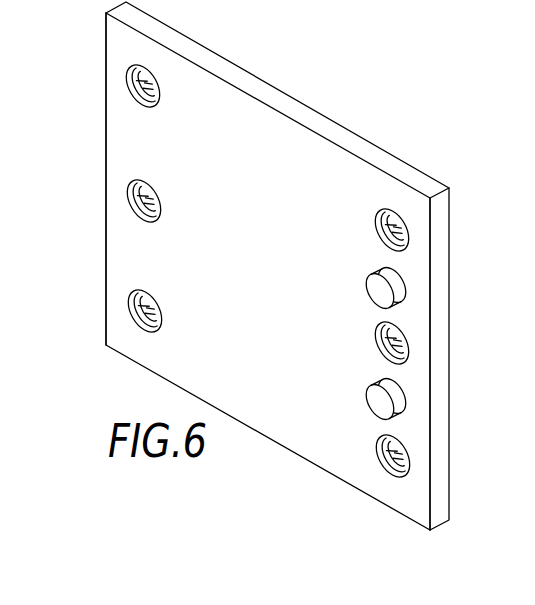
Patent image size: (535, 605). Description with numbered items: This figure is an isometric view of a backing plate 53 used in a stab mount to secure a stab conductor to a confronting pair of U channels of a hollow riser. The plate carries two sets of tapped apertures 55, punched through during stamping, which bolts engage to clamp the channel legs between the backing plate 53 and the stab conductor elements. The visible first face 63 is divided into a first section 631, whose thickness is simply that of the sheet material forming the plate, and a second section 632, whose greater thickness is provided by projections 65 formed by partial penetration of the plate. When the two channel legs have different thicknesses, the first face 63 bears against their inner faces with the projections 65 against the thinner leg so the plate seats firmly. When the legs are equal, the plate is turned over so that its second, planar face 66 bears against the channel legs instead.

The backing plate 53 is at (251, 266).
The tapped apertures 55 is at (140, 108).
The first face 63 is at (268, 271).
The first section 631 is at (107, 55).
The second section 632 is at (415, 212).
The projections 65 is at (372, 287).
The second planar face 66 is at (272, 84).